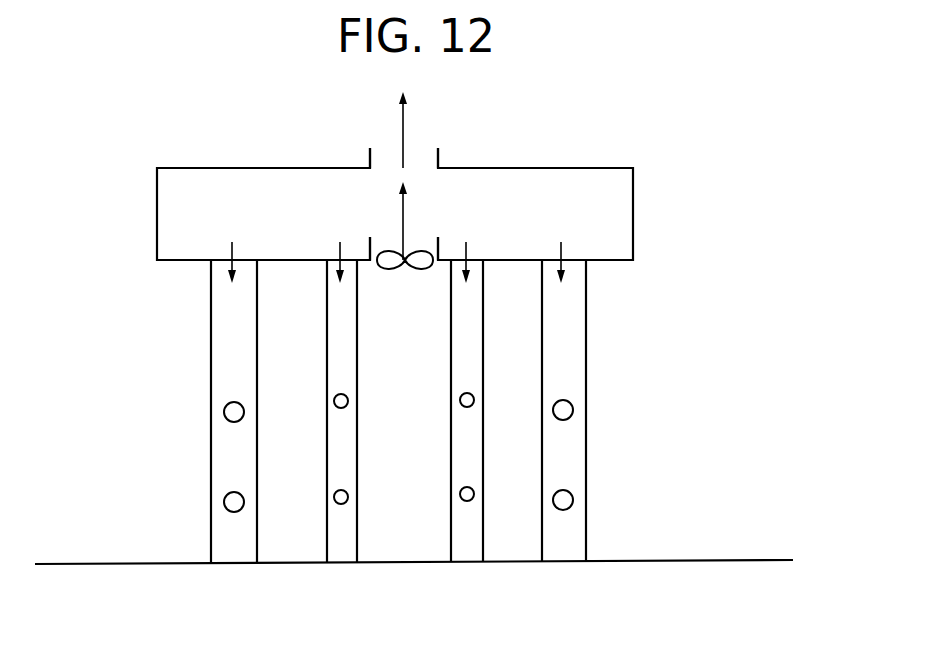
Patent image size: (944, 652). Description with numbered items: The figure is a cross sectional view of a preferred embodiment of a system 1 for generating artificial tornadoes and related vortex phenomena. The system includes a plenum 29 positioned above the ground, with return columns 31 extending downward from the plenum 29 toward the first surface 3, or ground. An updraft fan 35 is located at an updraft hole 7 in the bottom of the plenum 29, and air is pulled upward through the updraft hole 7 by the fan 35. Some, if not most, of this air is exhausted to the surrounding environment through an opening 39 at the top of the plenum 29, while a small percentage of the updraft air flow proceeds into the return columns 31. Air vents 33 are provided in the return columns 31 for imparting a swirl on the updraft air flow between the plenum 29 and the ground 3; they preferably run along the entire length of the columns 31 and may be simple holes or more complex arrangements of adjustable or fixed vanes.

The apparatus 1 is at (254, 130).
The first surface 3 is at (635, 561).
The updraft hole 7 is at (438, 270).
The plenum 29 is at (633, 208).
The return columns 31 is at (210, 380).
The air vents 33 is at (224, 502).
The updraft fan 35 is at (392, 268).
The exhaust opening 39 is at (440, 157).